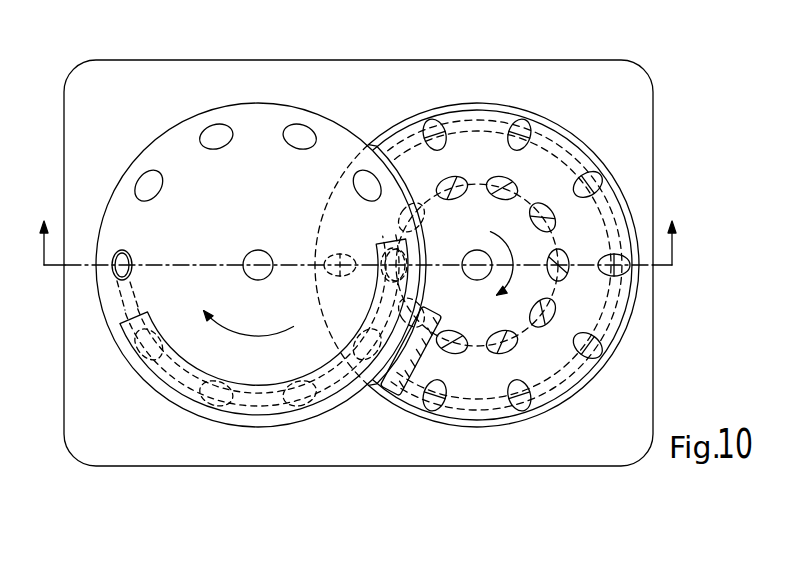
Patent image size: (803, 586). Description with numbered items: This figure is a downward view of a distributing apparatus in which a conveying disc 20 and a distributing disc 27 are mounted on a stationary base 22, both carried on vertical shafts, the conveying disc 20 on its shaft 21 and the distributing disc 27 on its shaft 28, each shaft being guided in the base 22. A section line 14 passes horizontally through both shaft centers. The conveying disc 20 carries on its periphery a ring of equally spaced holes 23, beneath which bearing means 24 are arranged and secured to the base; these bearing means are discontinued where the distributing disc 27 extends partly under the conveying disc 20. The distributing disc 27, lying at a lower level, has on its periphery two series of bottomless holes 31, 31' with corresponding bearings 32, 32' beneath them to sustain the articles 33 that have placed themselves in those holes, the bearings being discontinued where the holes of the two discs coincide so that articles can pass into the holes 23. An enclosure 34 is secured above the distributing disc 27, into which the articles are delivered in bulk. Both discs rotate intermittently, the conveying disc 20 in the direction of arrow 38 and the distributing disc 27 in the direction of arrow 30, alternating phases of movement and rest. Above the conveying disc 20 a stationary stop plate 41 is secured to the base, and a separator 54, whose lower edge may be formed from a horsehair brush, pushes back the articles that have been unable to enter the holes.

The section line 14- 14 is at (361, 240).
The conveying disc 20 is at (252, 116).
The shaft 21 is at (265, 260).
The stationary base 22 is at (612, 78).
The holes 23 is at (303, 138).
The bearing means 24 is at (126, 300).
The distributing disc 27 is at (503, 120).
The shaft 28 is at (474, 257).
The arrow 30 is at (506, 272).
The bottomless holes 31 is at (523, 181).
The bottomless holes 31' is at (548, 122).
The bearings 32 is at (498, 265).
The bearings 32' is at (515, 274).
The articles 33 is at (130, 262).
The enclosure 34 is at (597, 149).
The arrow 38 is at (236, 323).
The stationary stop plate 41 is at (250, 412).
The separator 54 is at (404, 372).